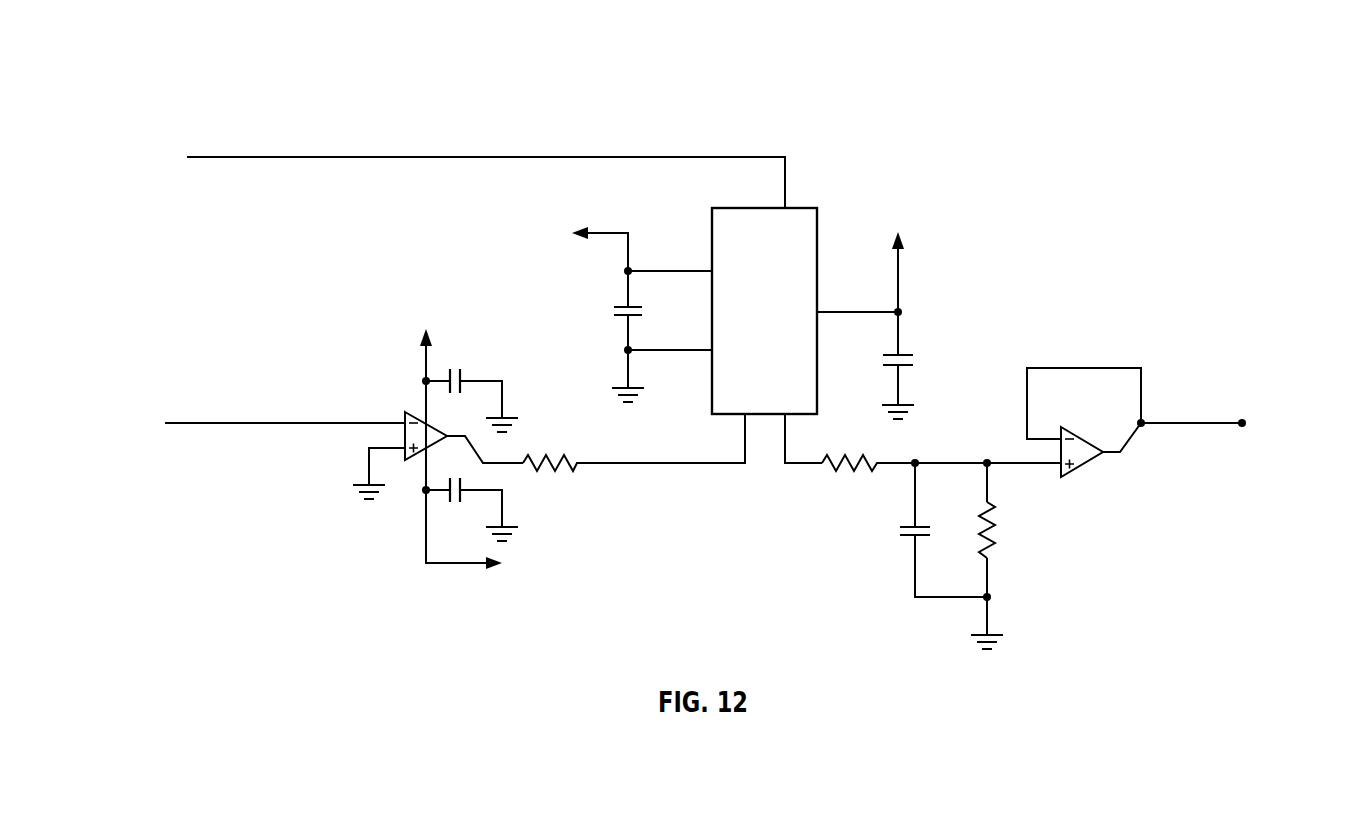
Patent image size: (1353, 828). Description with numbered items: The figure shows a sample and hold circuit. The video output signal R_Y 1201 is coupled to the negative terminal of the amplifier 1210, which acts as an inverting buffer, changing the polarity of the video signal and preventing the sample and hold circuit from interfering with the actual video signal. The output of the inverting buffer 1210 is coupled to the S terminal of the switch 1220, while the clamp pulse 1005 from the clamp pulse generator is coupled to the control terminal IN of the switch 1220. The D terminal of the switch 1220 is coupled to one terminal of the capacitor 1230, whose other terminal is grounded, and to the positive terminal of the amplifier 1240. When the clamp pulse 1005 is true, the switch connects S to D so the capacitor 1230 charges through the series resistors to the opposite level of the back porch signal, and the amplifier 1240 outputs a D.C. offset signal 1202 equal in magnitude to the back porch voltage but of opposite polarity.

The clamp pulse 1005 is at (141, 130).
The video output signal R_Y 1201 is at (136, 401).
The amplifier (inverting buffer) 1210 is at (418, 413).
The switch 1220 is at (770, 207).
The capacitor 1230 is at (896, 532).
The amplifier 1240 is at (1082, 466).
The D.C. offset signal 1202 is at (1278, 403).